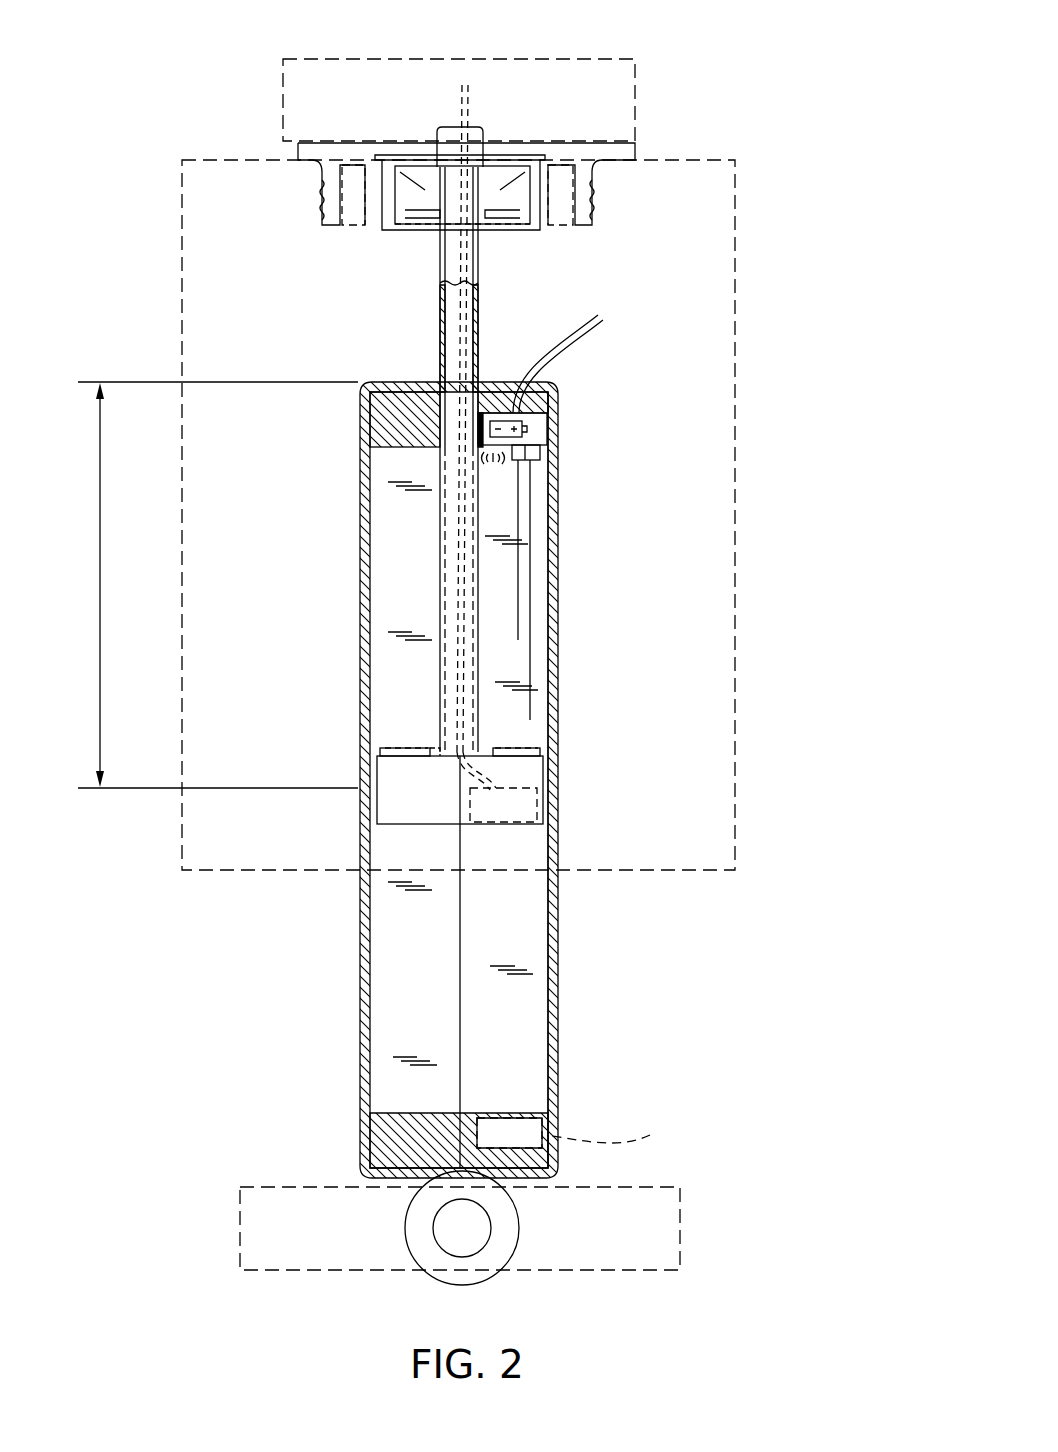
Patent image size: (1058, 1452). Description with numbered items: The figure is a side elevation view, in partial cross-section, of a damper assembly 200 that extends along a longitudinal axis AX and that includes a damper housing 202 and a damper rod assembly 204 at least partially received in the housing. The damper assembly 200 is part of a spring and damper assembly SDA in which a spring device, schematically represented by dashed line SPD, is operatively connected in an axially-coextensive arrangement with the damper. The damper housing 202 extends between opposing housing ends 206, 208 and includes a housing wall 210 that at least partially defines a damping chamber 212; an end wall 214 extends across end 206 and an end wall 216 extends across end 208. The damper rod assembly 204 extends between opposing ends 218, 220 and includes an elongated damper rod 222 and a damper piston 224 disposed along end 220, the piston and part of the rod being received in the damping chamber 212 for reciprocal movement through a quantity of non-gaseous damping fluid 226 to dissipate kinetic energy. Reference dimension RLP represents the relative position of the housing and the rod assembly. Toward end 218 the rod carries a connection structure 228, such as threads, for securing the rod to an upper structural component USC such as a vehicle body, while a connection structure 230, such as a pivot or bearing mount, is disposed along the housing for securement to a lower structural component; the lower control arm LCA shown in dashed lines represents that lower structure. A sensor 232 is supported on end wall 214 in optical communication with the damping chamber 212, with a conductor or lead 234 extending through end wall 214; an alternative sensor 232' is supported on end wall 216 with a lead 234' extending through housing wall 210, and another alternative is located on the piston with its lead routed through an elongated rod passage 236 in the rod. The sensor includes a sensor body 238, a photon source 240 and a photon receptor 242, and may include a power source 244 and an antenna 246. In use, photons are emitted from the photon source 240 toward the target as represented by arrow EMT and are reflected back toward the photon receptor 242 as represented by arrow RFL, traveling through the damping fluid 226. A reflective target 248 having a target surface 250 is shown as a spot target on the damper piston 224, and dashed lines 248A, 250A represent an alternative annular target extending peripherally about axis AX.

The damper assembly 200 is at (648, 275).
The damper housing 202 is at (362, 968).
The damper rod assembly 204 is at (436, 308).
The housing end 206 is at (345, 357).
The housing end 208 is at (305, 1152).
The housing wall 210 is at (550, 848).
The damping chamber 212 is at (523, 940).
The end wall 214 is at (392, 428).
The end wall 216 is at (400, 1143).
The damper rod assembly end 218 is at (332, 242).
The damper rod assembly end 220 is at (415, 712).
The elongated damper rod 222 is at (440, 540).
The damper piston 224 is at (392, 805).
The non-gaseous damping fluid 226 is at (398, 640).
The connection structure 228 is at (453, 127).
The connection structure 230 is at (405, 1246).
The sensor 232 is at (594, 424).
The sensor 232' is at (584, 1092).
The conductor or lead 234 is at (607, 364).
The conductor or lead 234' is at (638, 1112).
The elongated rod passage 236 is at (470, 302).
The sensor body 238 is at (560, 395).
The photon source 240 is at (541, 447).
The photon receptor 242 is at (541, 462).
The power source 244 is at (497, 410).
The antenna 246 is at (486, 458).
The reflective target 248 is at (546, 750).
The reflective target 248A is at (379, 750).
The target surface 250 is at (548, 745).
The annular target surface 250A is at (402, 746).
The upper structural component USC is at (637, 97).
The spring and damper assembly SDA is at (797, 226).
The spring device SPD is at (735, 575).
The reference dimension RLP is at (217, 585).
The reflected photon arrow RFL is at (530, 600).
The emitted photon arrow EMT is at (532, 660).
The longitudinally-extending axis AX is at (460, 1026).
The lower control arm LCA is at (300, 1270).